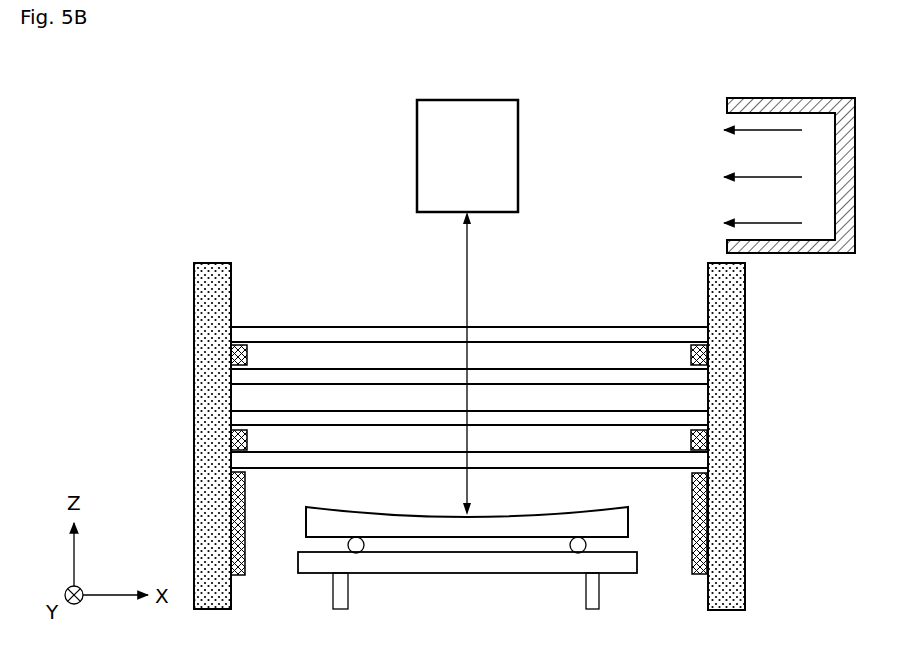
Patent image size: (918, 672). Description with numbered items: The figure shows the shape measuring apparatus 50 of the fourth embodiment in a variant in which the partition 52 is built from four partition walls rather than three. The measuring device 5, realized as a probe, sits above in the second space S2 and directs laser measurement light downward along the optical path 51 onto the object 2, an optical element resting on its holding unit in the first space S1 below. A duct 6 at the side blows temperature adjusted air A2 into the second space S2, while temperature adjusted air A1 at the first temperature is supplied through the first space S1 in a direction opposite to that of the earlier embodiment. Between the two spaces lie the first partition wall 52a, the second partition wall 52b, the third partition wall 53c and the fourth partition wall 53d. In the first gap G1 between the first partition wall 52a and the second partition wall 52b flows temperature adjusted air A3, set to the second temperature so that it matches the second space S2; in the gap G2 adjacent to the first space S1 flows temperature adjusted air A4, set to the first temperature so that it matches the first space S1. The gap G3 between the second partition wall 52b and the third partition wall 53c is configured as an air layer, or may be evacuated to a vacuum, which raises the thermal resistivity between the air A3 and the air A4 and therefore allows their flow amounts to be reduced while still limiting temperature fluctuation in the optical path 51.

The shape measuring apparatus 50 is at (641, 68).
The partition 52 is at (399, 391).
The first partition wall 52a is at (240, 335).
The second partition wall 52b is at (240, 380).
The third partition wall 53c is at (240, 415).
The fourth partition wall 53d is at (420, 449).
The measuring device 5 is at (518, 152).
The optical path 51 is at (456, 216).
The duct 6 is at (778, 97).
The object 2 is at (382, 520).
The second space S2 is at (365, 174).
The first space S1 is at (281, 549).
The first gap G1 is at (335, 352).
The second gap G2 is at (321, 442).
The gap G3 is at (292, 396).
The temperature adjusted air A1 is at (567, 497).
The temperature adjusted air A2 is at (567, 303).
The temperature adjusted air A3 is at (428, 363).
The temperature adjusted air A4 is at (428, 447).